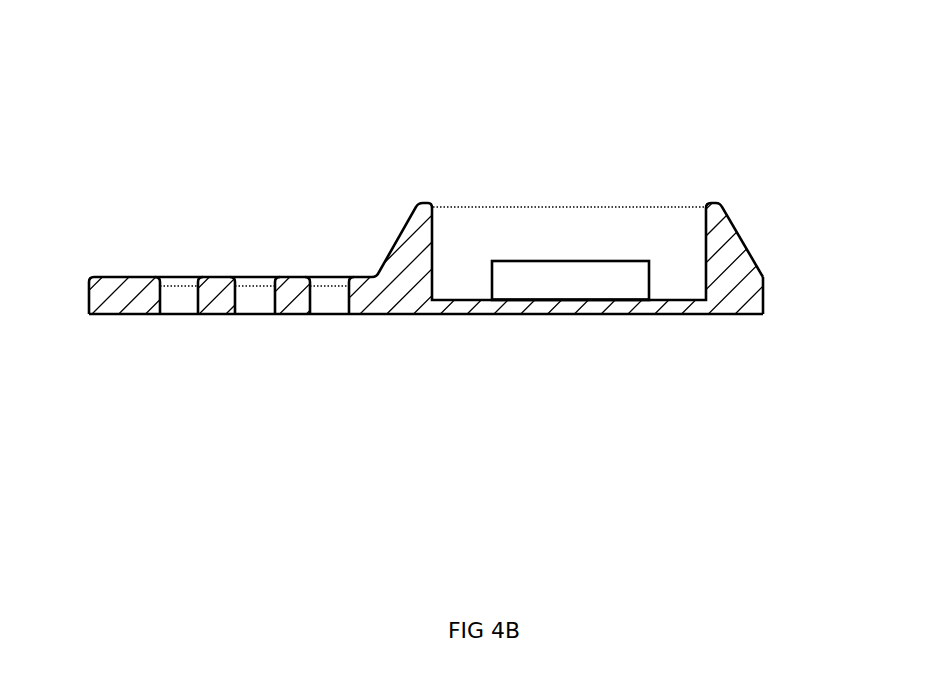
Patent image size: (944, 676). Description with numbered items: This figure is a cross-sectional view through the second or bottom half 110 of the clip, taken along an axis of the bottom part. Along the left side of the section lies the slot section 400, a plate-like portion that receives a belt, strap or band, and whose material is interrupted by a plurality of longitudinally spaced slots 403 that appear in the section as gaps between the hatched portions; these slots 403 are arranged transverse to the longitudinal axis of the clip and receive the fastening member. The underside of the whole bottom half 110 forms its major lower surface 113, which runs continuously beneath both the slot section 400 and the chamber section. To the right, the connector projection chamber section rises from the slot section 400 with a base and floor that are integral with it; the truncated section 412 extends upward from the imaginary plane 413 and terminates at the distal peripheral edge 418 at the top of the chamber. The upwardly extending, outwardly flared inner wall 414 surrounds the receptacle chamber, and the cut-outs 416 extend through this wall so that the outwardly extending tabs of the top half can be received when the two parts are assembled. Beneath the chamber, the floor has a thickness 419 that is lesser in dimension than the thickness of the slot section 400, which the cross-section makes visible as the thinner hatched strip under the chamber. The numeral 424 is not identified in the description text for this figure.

The second or bottom half 110 is at (330, 115).
The slot section 400 is at (118, 292).
The slots 403 is at (177, 295).
The major lower surface 113 is at (412, 313).
The inner wall 414 is at (561, 238).
The distal peripheral edge 418 is at (672, 200).
The thickness of floor 419 is at (567, 307).
The cut-outs 416 is at (593, 287).
The die attach layer 424 is at (527, 298).
The truncated section 412 is at (737, 228).
The imaginary plane 413 is at (763, 277).